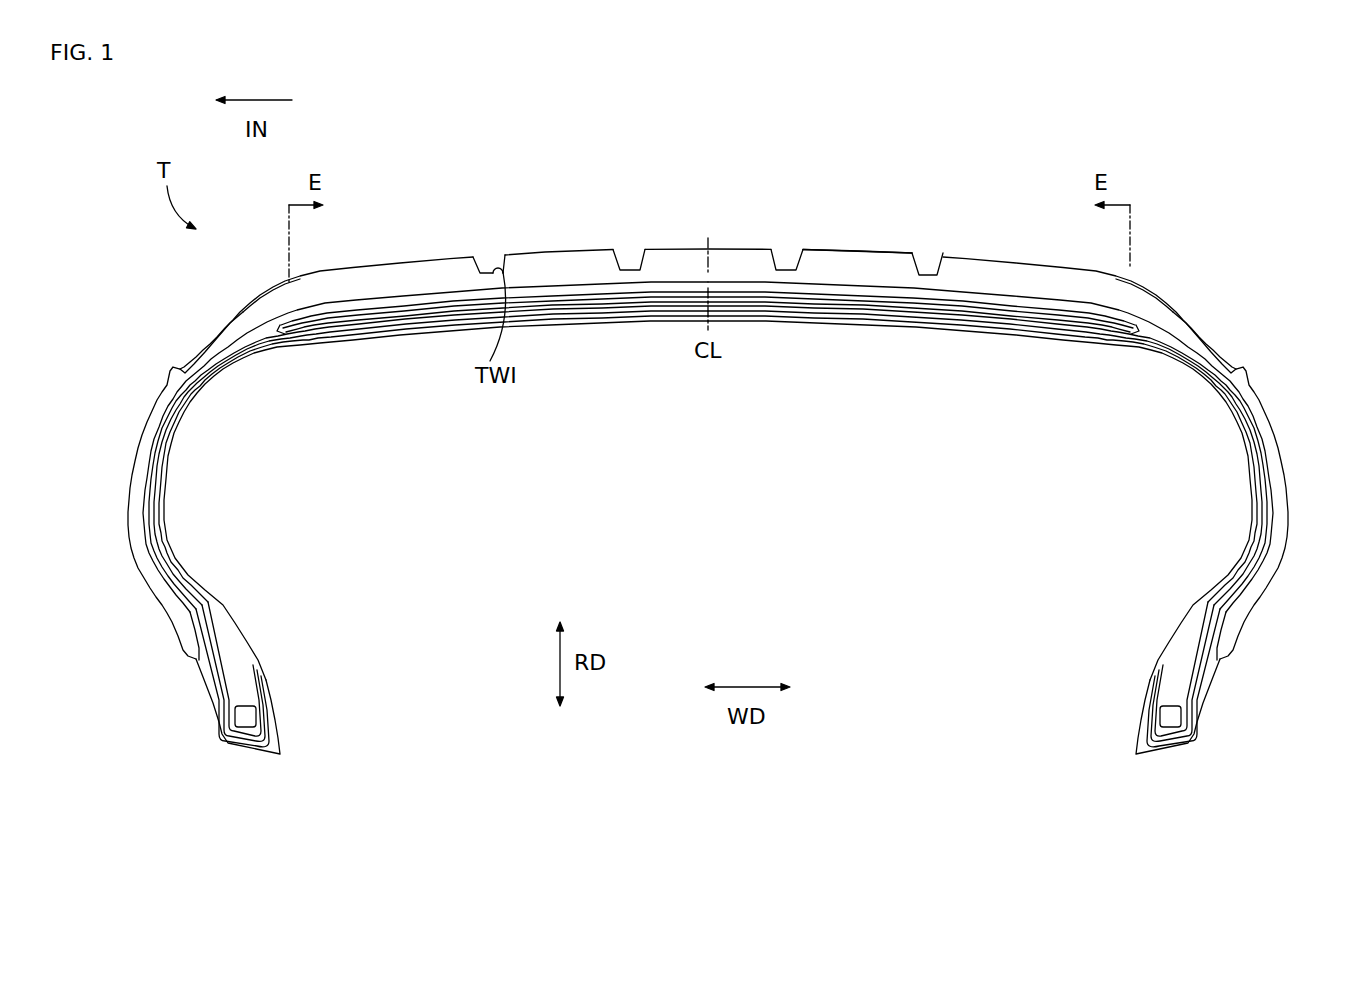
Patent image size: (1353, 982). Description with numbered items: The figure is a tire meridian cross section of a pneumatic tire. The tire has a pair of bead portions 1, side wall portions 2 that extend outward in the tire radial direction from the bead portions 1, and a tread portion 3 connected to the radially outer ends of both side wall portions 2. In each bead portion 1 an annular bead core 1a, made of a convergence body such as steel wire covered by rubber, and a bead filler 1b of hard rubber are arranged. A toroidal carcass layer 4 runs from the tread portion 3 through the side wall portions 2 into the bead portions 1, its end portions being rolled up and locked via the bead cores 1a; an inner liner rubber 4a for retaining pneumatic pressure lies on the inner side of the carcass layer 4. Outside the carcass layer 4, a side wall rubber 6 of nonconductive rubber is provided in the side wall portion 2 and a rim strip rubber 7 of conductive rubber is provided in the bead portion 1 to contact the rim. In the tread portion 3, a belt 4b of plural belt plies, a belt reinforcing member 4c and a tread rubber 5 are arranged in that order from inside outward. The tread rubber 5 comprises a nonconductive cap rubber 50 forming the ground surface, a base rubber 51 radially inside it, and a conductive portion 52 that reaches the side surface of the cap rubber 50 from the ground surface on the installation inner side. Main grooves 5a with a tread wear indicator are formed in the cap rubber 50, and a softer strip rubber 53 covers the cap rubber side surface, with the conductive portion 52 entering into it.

The bead portion 1 is at (219, 741).
The bead core 1a is at (258, 718).
The bead filler 1b is at (238, 685).
The side wall portion 2 is at (119, 436).
The tread portion 3 is at (431, 244).
The carcass layer 4 is at (1244, 417).
The inner liner rubber 4a is at (301, 344).
The belt 4b is at (558, 306).
The belt reinforcing member 4c is at (367, 302).
The tread rubber 5 is at (814, 245).
The main groove 5a is at (482, 255).
The cap rubber 50 is at (570, 256).
The base rubber 51 is at (538, 287).
The conductive portion 52 is at (280, 287).
The strip rubber 53 is at (225, 325).
The side wall rubber 6 is at (133, 536).
The rim strip rubber 7 is at (195, 676).